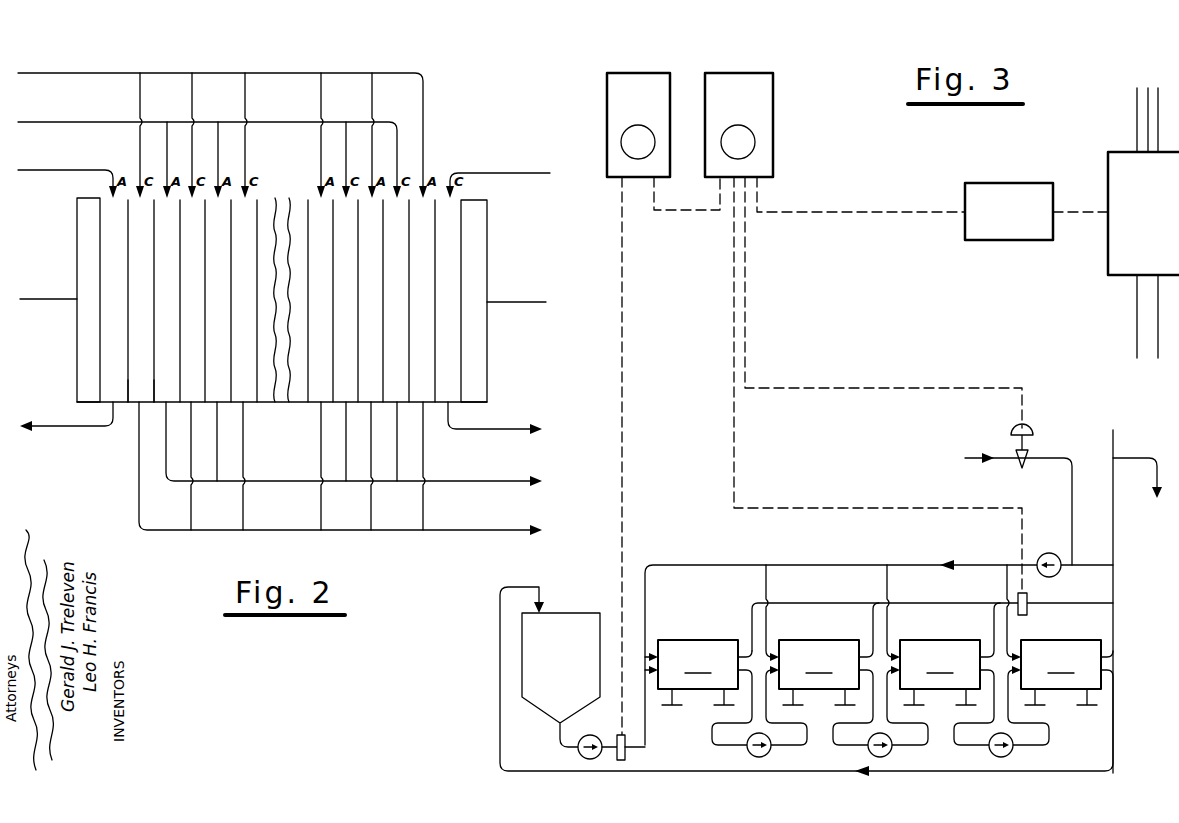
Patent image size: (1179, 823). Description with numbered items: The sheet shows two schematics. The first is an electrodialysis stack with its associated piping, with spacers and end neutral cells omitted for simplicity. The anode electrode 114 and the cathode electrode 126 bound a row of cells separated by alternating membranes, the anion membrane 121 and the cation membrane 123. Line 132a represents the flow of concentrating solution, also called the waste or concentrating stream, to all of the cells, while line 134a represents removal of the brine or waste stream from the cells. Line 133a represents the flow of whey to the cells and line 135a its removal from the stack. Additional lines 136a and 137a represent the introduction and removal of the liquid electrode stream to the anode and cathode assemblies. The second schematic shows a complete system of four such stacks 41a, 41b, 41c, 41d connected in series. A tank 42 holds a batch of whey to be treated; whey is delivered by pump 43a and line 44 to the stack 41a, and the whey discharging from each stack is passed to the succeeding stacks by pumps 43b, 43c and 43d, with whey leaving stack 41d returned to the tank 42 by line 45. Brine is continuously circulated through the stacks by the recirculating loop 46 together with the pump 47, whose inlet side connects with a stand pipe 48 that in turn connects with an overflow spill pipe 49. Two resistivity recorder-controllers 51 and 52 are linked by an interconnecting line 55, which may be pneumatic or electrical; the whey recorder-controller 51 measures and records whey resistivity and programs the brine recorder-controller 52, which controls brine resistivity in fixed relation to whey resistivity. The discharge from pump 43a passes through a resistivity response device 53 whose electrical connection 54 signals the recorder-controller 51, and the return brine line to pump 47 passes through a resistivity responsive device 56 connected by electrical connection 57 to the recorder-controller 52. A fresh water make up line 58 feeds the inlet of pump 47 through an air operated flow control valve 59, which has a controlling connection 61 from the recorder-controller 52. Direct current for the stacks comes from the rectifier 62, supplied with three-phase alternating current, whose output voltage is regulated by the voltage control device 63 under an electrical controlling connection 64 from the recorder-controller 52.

In FIG. 2, the whey feed line 133a is at (106, 73).
In FIG. 2, the concentrating solution feed line 132a is at (106, 122).
In FIG. 2, the electrode stream inlet line 136a is at (106, 170).
In FIG. 2, the electrode stream outlet line 137a is at (84, 427).
In FIG. 2, the brine removal line 134a is at (480, 482).
In FIG. 2, the whey removal line 135a is at (480, 531).
In FIG. 2, the anode electrode 114 is at (88, 358).
In FIG. 2, the cathode electrode 126 is at (483, 363).
In FIG. 2, the anion membrane 121 is at (131, 395).
In FIG. 2, the cation membrane 123 is at (155, 405).
In FIG. 3, the whey resistivity recorder-controller 51 is at (660, 113).
In FIG. 3, the brine resistivity recorder-controller 52 is at (714, 148).
In FIG. 3, the interconnecting line 55 is at (686, 213).
In FIG. 3, the electrical connection 54 is at (622, 346).
In FIG. 3, the electrical controlling connection 64 is at (861, 211).
In FIG. 3, the voltage control device 63 is at (1010, 192).
In FIG. 3, the rectifier 62 is at (1108, 182).
In FIG. 3, the controlling connection 61 is at (858, 388).
In FIG. 3, the electrical connection 57 is at (858, 508).
In FIG. 3, the air operated flow control valve 59 is at (1031, 441).
In FIG. 3, the fresh water make up line 58 is at (1073, 486).
In FIG. 3, the stand pipe 48 is at (1110, 531).
In FIG. 3, the overflow spill pipe 49 is at (1146, 456).
In FIG. 3, the recirculating loop 46 is at (855, 557).
In FIG. 3, the pump 47 is at (1049, 553).
In FIG. 3, the resistivity responsive device 56 is at (1028, 612).
In FIG. 3, the return line 45 is at (1113, 727).
In FIG. 3, the tank 42 is at (572, 619).
In FIG. 3, the pump 43a is at (598, 735).
In FIG. 3, the pump 43b is at (768, 753).
In FIG. 3, the pump 43c is at (889, 753).
In FIG. 3, the pump 43d is at (1010, 753).
In FIG. 3, the line 44 is at (672, 713).
In FIG. 3, the resistivity response device 53 is at (628, 750).
In FIG. 3, the electrodialysis stack 41a is at (698, 672).
In FIG. 3, the electrodialysis stack 41b is at (819, 672).
In FIG. 3, the electrodialysis stack 41c is at (940, 672).
In FIG. 3, the electrodialysis stack 41d is at (1061, 672).